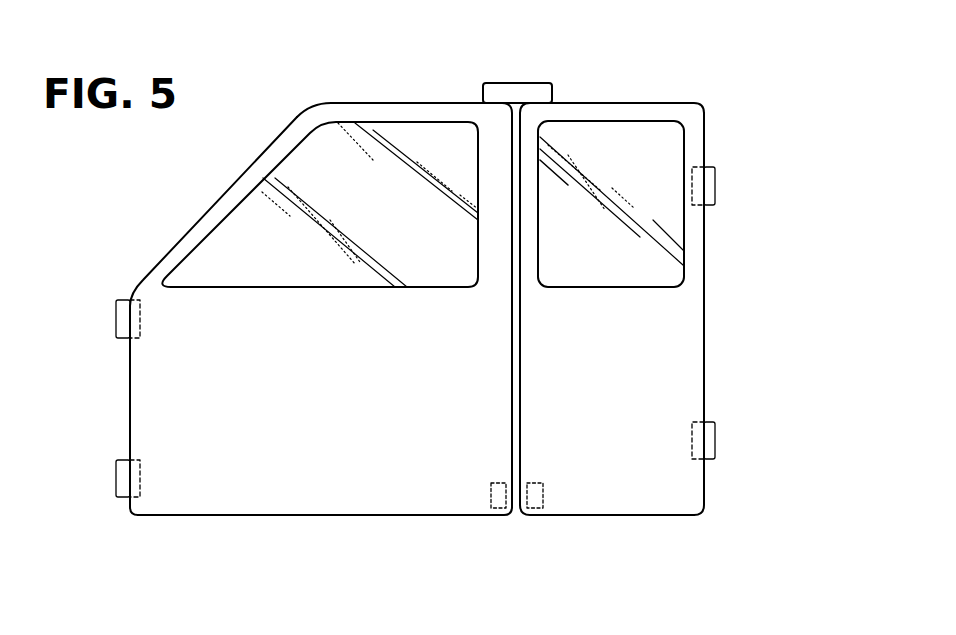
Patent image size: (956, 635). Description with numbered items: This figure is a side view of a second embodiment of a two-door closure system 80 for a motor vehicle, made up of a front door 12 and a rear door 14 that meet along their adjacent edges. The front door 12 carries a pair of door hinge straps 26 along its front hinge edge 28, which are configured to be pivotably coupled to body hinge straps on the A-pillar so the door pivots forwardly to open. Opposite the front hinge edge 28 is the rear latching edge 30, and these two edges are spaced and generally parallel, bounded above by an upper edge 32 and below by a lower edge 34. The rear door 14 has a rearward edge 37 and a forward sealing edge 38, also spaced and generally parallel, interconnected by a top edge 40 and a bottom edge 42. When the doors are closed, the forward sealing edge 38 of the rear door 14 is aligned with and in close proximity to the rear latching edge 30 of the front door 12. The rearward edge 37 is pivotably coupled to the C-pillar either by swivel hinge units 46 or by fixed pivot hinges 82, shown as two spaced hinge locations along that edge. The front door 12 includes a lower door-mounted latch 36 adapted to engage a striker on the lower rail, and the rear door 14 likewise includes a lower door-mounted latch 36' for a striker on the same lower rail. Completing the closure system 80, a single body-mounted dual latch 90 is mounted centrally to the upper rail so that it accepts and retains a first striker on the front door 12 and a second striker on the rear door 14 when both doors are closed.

The front door 12 is at (281, 303).
The rear door 14 is at (680, 304).
The door hinge straps 26 is at (123, 318).
The front hinge edge 28 is at (129, 400).
The rear latching edge 30 is at (519, 323).
The upper edge 32 is at (430, 102).
The lower edge 34 is at (307, 516).
The lower door-mounted latch 36 is at (485, 528).
The lower door-mounted latch 36' is at (554, 528).
The rearward edge 37 is at (705, 250).
The forward sealing edge 38 is at (513, 399).
The top edge 40 is at (582, 102).
The bottom edge 42 is at (608, 516).
The swivel hinge units 46 is at (766, 303).
The fixed pivot hinges 82 is at (722, 185).
The two-door closure system 80 is at (516, 522).
The body-mounted dual latch 90 is at (539, 68).